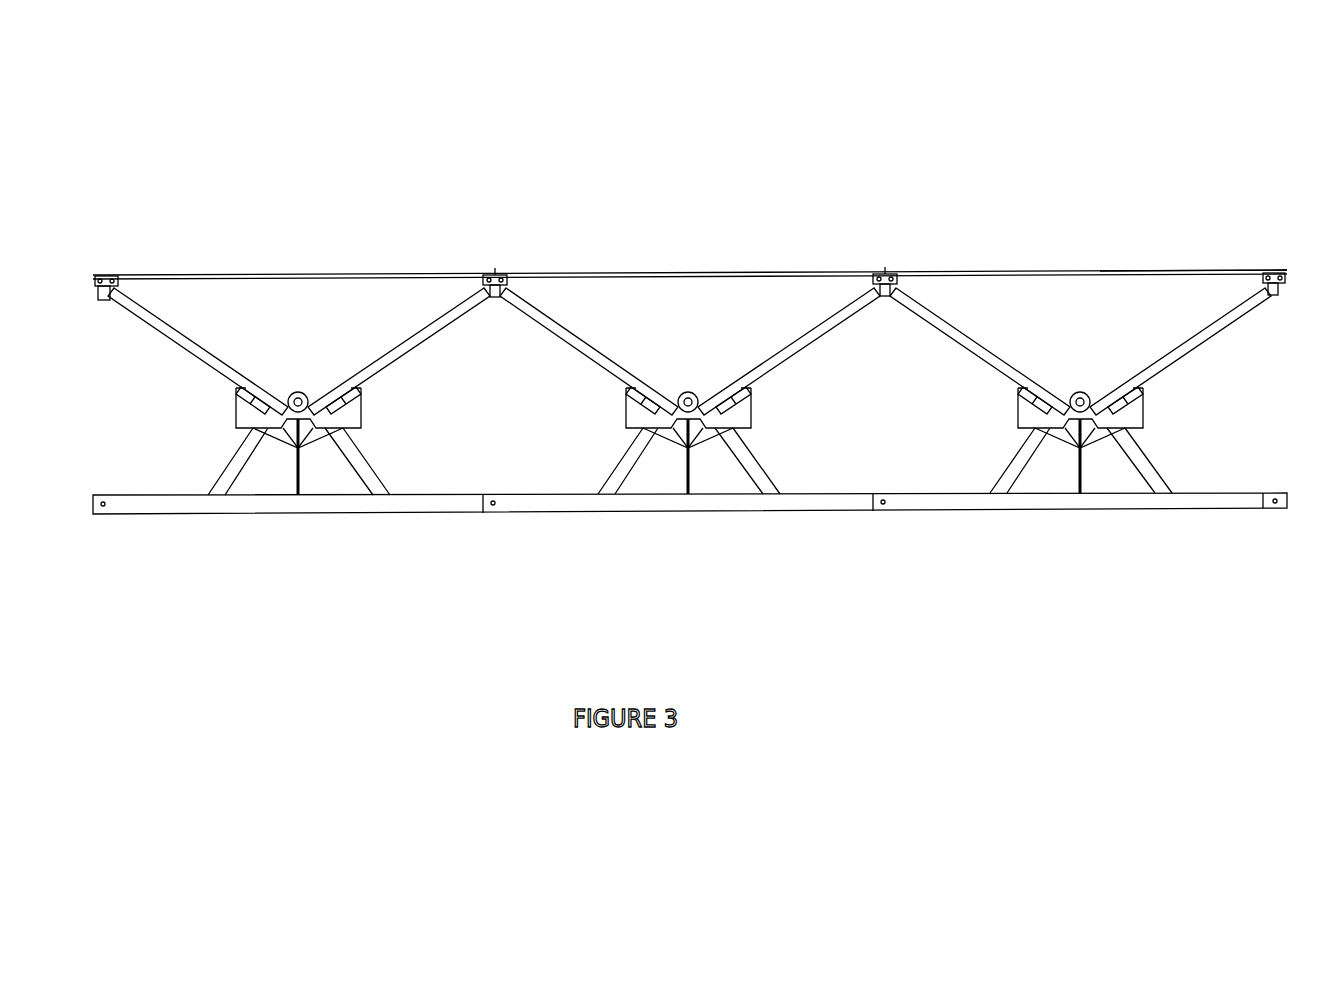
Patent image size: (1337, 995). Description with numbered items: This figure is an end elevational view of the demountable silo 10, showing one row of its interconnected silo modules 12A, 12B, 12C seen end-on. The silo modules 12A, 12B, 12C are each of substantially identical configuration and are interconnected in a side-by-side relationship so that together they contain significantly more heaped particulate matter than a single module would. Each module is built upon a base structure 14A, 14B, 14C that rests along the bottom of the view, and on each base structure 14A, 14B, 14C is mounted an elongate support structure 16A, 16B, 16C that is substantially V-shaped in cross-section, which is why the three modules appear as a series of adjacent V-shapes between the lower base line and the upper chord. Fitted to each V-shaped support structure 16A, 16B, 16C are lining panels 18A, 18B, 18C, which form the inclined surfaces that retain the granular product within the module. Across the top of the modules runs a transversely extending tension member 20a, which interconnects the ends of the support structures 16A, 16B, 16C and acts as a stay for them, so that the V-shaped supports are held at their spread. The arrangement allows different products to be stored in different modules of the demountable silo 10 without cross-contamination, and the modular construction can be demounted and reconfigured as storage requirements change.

The demountable silo 10 is at (690, 300).
The silo module 12A is at (1075, 255).
The silo module 12B is at (770, 258).
The silo module 12C is at (308, 268).
The base structure 14A is at (1160, 435).
The base structure 14B is at (777, 460).
The base structure 14C is at (380, 465).
The support structure 16A is at (1108, 289).
The support structure 16B is at (712, 308).
The support structure 16C is at (278, 302).
The lining panel 18A is at (938, 305).
The lining panel 18B is at (545, 306).
The lining panel 18C is at (155, 305).
The tension member 20a is at (1157, 272).